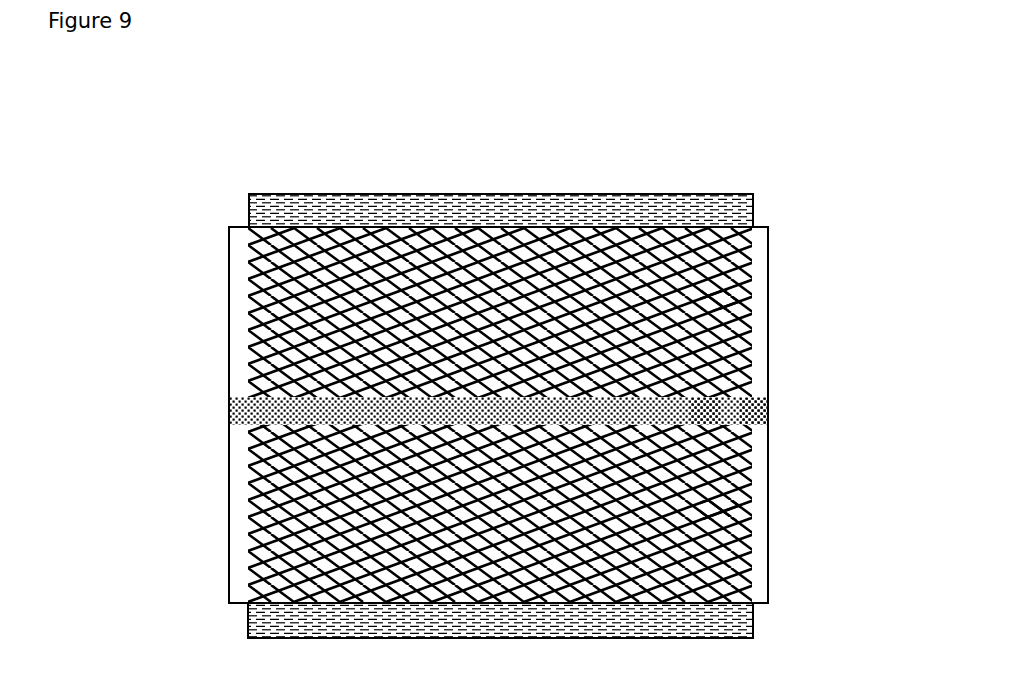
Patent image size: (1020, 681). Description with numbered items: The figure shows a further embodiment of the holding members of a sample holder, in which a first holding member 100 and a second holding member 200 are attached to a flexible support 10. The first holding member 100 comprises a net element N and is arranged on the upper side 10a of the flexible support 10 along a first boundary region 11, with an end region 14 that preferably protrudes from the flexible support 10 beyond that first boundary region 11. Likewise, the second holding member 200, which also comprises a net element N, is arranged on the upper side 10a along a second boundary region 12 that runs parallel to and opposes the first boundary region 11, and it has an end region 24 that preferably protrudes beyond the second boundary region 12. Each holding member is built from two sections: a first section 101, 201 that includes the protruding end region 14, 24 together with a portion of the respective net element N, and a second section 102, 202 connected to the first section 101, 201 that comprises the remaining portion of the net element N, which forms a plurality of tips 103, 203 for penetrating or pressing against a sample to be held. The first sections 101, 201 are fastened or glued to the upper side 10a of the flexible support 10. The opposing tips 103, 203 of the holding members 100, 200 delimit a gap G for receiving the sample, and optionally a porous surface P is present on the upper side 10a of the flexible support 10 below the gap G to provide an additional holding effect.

The end region 14 is at (250, 207).
The end region 24 is at (247, 620).
The first boundary region 11 is at (760, 227).
The second boundary region 12 is at (763, 603).
The flexible support 10 is at (762, 449).
The upper side 10a is at (760, 543).
The first holding member 100 is at (388, 308).
The first section 101 is at (272, 284).
The second section 102 is at (268, 380).
The tips 103 is at (262, 393).
The second holding member 200 is at (395, 513).
The first section 201 is at (268, 560).
The second section 202 is at (272, 454).
The tips 203 is at (233, 423).
The net element N is at (728, 300).
The gap G is at (706, 410).
The porous surface P is at (768, 408).